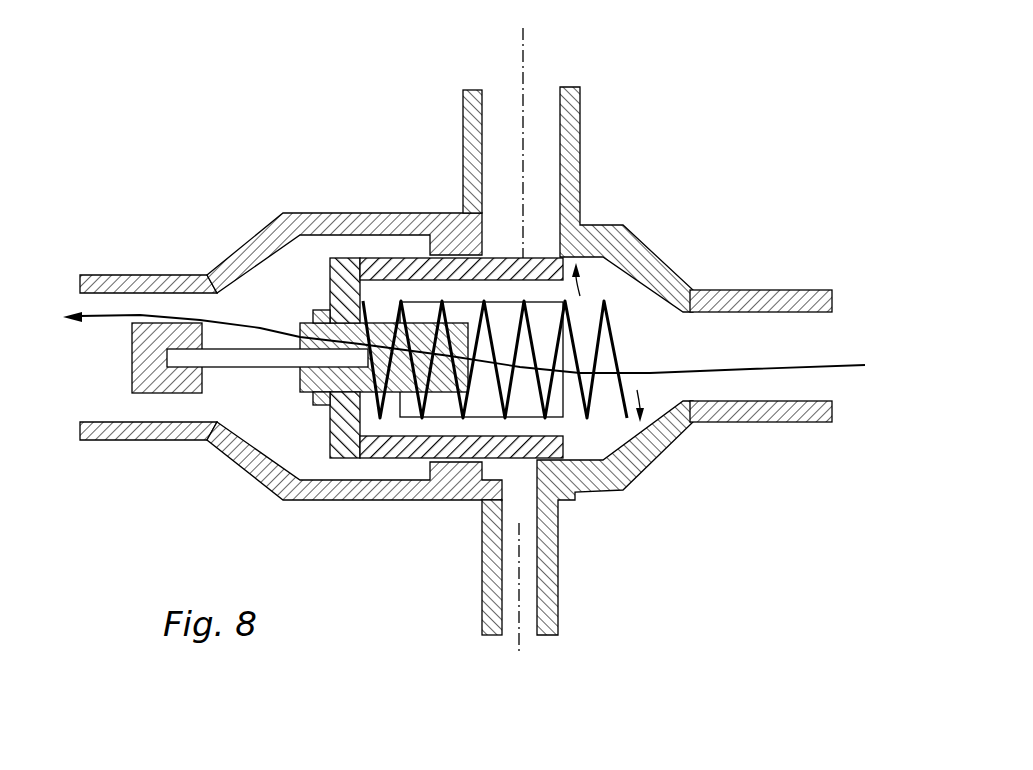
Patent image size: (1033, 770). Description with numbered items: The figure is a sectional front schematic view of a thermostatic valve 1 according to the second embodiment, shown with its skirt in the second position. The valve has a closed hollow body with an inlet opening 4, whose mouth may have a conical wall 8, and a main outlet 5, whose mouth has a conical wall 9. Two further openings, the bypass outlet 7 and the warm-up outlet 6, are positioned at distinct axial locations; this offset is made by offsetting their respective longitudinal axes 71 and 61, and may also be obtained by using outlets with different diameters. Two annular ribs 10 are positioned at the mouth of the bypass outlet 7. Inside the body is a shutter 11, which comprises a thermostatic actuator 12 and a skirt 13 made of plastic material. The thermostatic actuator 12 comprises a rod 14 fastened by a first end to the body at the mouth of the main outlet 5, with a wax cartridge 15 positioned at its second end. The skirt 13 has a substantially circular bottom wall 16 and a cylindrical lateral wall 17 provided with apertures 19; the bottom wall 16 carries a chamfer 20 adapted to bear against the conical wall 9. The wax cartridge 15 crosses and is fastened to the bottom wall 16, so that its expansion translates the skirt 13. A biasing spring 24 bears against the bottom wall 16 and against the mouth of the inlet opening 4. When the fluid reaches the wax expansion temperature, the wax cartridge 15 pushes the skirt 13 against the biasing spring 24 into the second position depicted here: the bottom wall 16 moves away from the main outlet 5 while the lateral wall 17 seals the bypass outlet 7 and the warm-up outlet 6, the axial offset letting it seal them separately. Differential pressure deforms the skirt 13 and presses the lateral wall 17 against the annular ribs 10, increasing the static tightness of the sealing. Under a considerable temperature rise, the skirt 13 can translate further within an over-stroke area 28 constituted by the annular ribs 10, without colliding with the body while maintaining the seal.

The thermostatic valve 1 is at (781, 107).
The inlet opening 4 is at (805, 340).
The main outlet 5 is at (88, 384).
The warm-up outlet 6 is at (528, 621).
The longitudinal axis of the warm-up outlet 61 is at (518, 647).
The bypass outlet 7 is at (542, 116).
The longitudinal axis of the bypass outlet 71 is at (524, 45).
The conical wall 8 is at (652, 270).
The conical wall 9 is at (279, 238).
The annular ribs 10 is at (497, 257).
The shutter 11 is at (268, 302).
The thermostatic actuator 12 is at (210, 542).
The skirt 13 is at (391, 238).
The rod 14 is at (300, 392).
The wax cartridge 15 is at (278, 362).
The bottom wall 16 is at (330, 293).
The lateral wall 17 is at (540, 260).
The apertures 19 is at (440, 402).
The chamfer 20 is at (340, 456).
The biasing spring 24 is at (613, 347).
The over-stroke area 28 is at (582, 306).